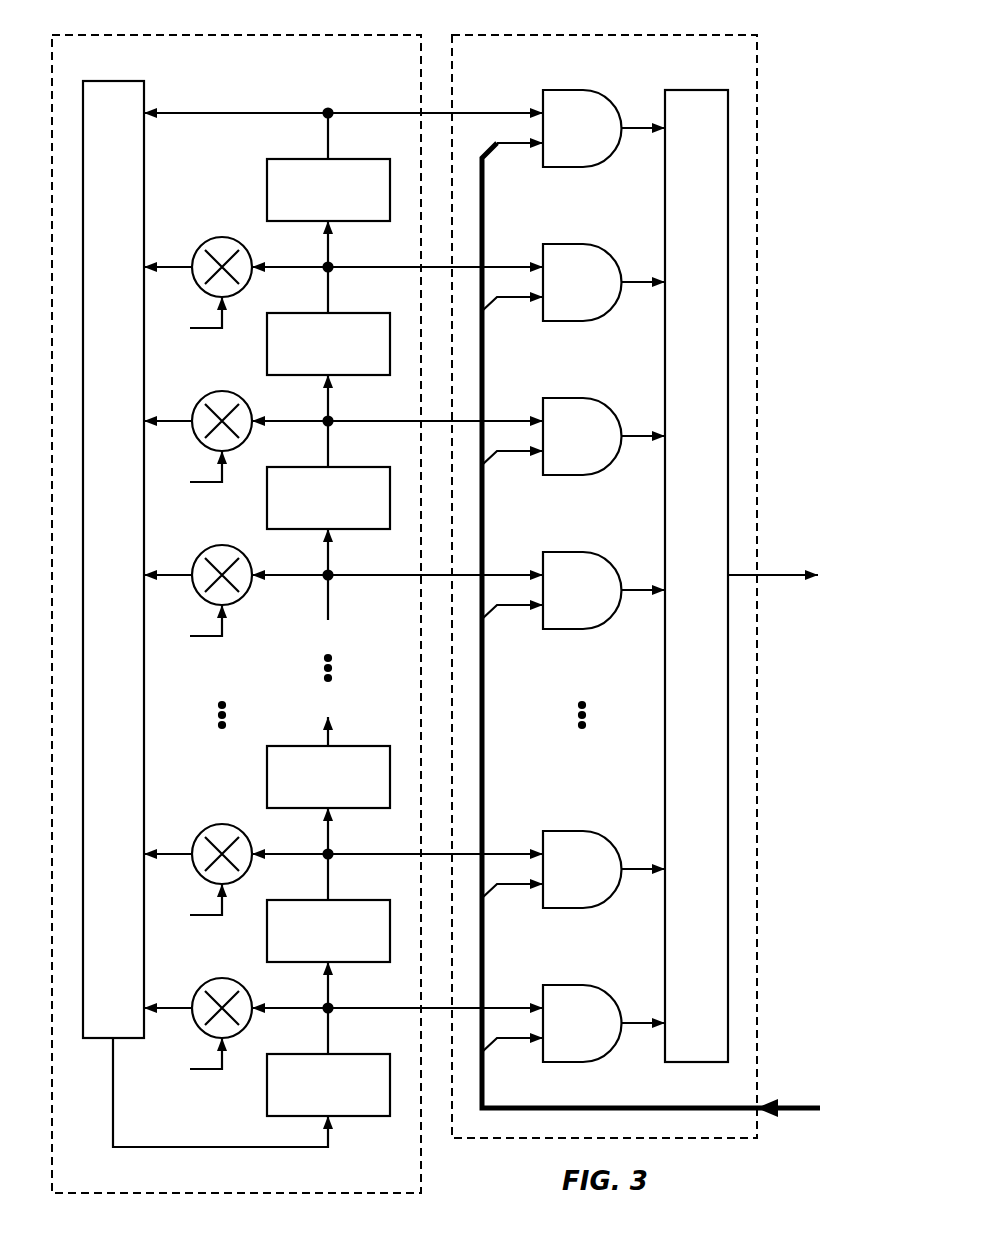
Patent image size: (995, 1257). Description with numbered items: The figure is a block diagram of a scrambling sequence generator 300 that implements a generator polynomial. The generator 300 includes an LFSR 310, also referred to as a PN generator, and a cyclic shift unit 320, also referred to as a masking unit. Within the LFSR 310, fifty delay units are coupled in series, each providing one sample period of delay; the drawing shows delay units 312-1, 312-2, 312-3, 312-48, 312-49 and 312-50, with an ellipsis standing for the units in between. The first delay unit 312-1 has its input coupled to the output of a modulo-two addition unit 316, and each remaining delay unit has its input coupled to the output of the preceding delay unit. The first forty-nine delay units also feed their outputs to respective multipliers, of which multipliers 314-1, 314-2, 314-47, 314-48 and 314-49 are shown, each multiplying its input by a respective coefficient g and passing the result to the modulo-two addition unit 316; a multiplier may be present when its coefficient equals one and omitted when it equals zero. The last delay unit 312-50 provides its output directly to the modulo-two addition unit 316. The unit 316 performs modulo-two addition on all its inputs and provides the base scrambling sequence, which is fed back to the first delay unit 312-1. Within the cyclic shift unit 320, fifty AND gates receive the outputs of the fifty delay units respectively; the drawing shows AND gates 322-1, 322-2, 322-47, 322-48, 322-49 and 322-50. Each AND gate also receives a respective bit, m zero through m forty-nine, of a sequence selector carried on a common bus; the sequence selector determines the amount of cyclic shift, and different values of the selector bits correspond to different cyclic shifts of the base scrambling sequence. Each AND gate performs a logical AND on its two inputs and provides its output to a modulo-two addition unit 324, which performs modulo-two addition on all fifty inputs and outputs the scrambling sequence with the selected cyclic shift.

The scrambling sequence generator 300 is at (795, 32).
The LFSR 310 is at (230, 36).
The cyclic shift unit 320 is at (599, 36).
The modulo-2 addition unit 316 is at (108, 82).
The modulo-2 addition unit 324 is at (690, 90).
The delay unit 312-50 is at (358, 159).
The delay unit 312-49 is at (358, 313).
The delay unit 312-48 is at (358, 467).
The delay unit 312-3 is at (358, 746).
The delay unit 312-2 is at (358, 900).
The delay unit 312-1 is at (358, 1054).
The multiplier 314-49 is at (218, 237).
The multiplier 314-48 is at (218, 391).
The multiplier 314-47 is at (218, 545).
The multiplier 314-2 is at (218, 824).
The multiplier 314-1 is at (218, 978).
The AND gate 322-50 is at (570, 168).
The AND gate 322-49 is at (570, 244).
The AND gate 322-48 is at (570, 398).
The AND gate 322-47 is at (570, 552).
The AND gate 322-2 is at (570, 831).
The AND gate 322-1 is at (570, 985).